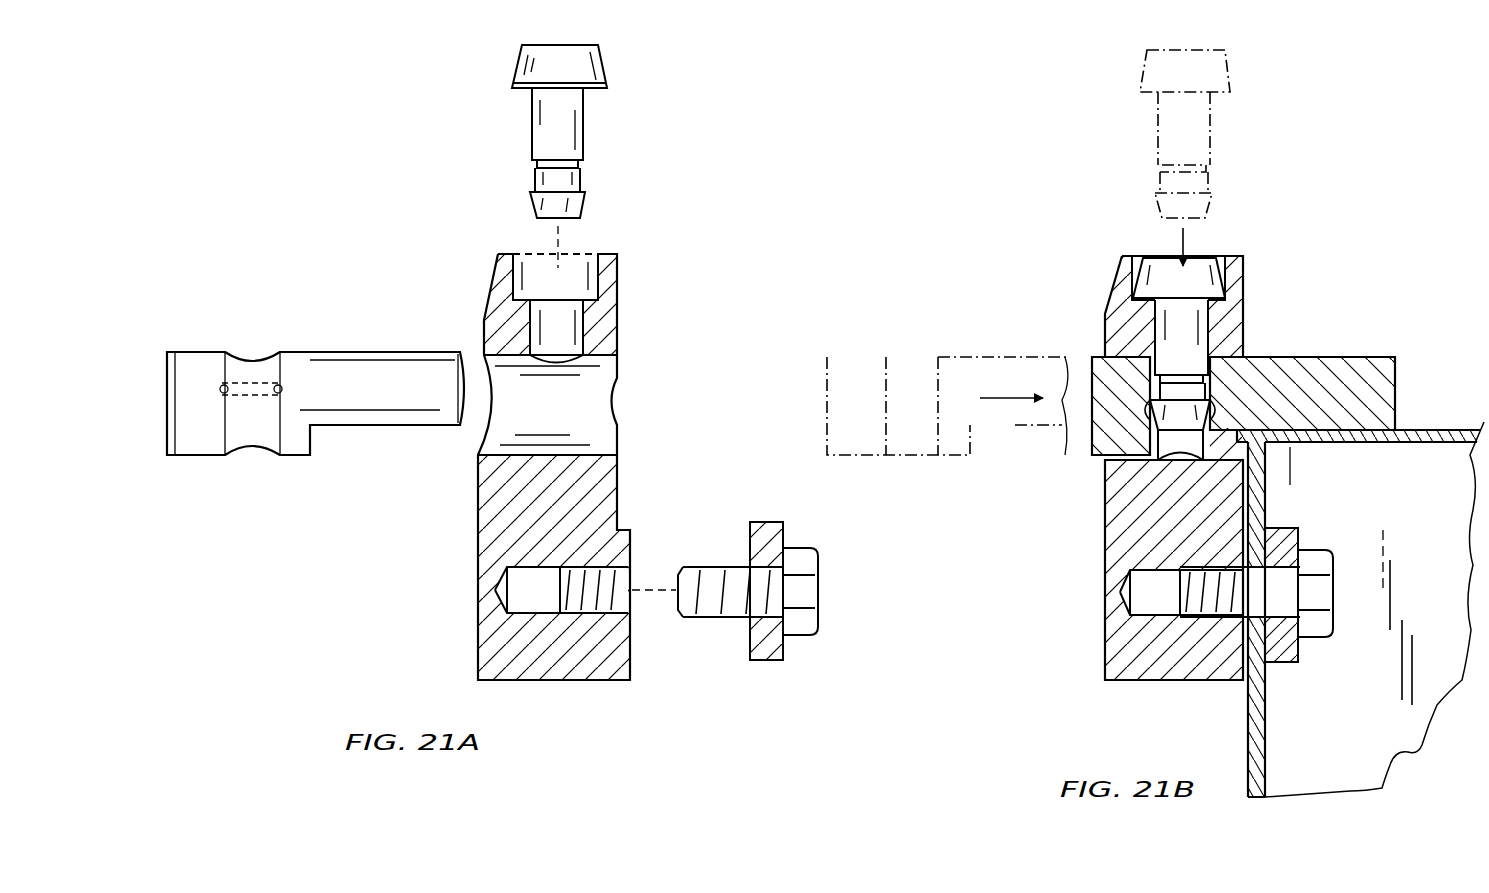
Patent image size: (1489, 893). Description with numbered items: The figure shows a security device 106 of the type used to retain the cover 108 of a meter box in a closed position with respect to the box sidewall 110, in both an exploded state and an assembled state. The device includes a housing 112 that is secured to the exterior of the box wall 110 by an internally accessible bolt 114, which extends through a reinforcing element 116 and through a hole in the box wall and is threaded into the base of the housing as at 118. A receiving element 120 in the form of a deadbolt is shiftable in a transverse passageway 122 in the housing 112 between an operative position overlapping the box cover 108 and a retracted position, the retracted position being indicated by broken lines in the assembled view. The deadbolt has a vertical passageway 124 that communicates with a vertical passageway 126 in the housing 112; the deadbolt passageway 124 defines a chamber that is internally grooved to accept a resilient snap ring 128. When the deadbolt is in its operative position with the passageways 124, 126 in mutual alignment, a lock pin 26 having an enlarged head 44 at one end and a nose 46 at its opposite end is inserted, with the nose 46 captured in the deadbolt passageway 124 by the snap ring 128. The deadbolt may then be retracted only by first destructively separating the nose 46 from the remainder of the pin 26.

In FIG. 21A, the enlarged head 44 is at (603, 70).
In FIG. 21B, the enlarged head 44 is at (1200, 270).
In FIG. 21A, the pin 26 is at (585, 140).
In FIG. 21B, the pin 26 is at (1138, 316).
In FIG. 21A, the nose 46 is at (590, 205).
In FIG. 21B, the nose 46 is at (1167, 412).
In FIG. 21A, the security device 106 is at (658, 270).
In FIG. 21B, the security device 106 is at (1315, 330).
In FIG. 21A, the vertical passageway 126 is at (578, 332).
In FIG. 21B, the vertical passageway 126 is at (1203, 320).
In FIG. 21A, the resilient snap ring 128 is at (233, 388).
In FIG. 21B, the resilient snap ring 128 is at (1153, 383).
In FIG. 21A, the receiving element 120 is at (345, 352).
In FIG. 21B, the receiving element 120 is at (1355, 358).
In FIG. 21A, the housing 112 is at (490, 522).
In FIG. 21B, the housing 112 is at (1118, 522).
In FIG. 21A, the threaded base 118 is at (617, 608).
In FIG. 21B, the threaded base 118 is at (1210, 616).
In FIG. 21A, the bolt 114 is at (815, 586).
In FIG. 21B, the bolt 114 is at (1325, 595).
In FIG. 21A, the reinforcing element 116 is at (763, 662).
In FIG. 21B, the reinforcing element 116 is at (1285, 535).
In FIG. 21B, the transverse passageway 122 is at (1220, 363).
In FIG. 21B, the vertical passageway 124 is at (1170, 447).
In FIG. 21B, the cover 108 is at (1433, 430).
In FIG. 21B, the box sidewall 110 is at (1262, 720).